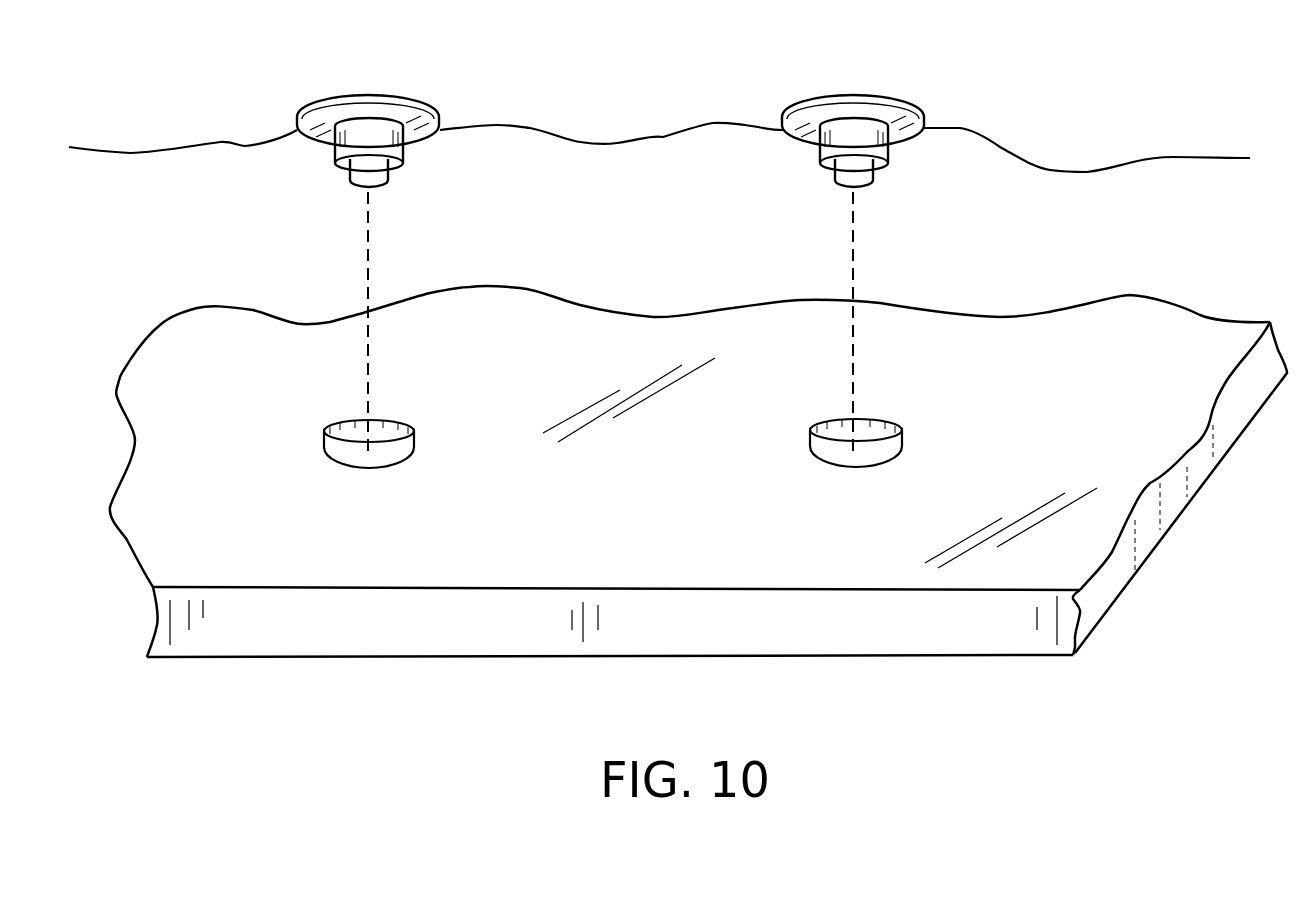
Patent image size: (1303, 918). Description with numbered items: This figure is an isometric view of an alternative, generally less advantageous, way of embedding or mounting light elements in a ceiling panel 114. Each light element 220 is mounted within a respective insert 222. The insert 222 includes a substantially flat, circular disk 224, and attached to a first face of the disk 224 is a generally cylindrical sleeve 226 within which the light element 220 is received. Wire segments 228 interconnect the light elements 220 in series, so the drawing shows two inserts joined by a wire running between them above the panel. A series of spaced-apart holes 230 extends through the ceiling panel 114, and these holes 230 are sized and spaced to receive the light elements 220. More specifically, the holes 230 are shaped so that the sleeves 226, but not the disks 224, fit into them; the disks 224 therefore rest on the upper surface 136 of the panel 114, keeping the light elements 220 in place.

The ceiling panel 114 is at (1193, 312).
The upper surface 136 is at (1168, 398).
The light element 220 is at (377, 185).
The insert 222 is at (367, 93).
The circular disk 224 is at (324, 122).
The cylindrical sleeve 226 is at (305, 138).
The wire segment 228 is at (130, 155).
The hole 230 is at (415, 452).